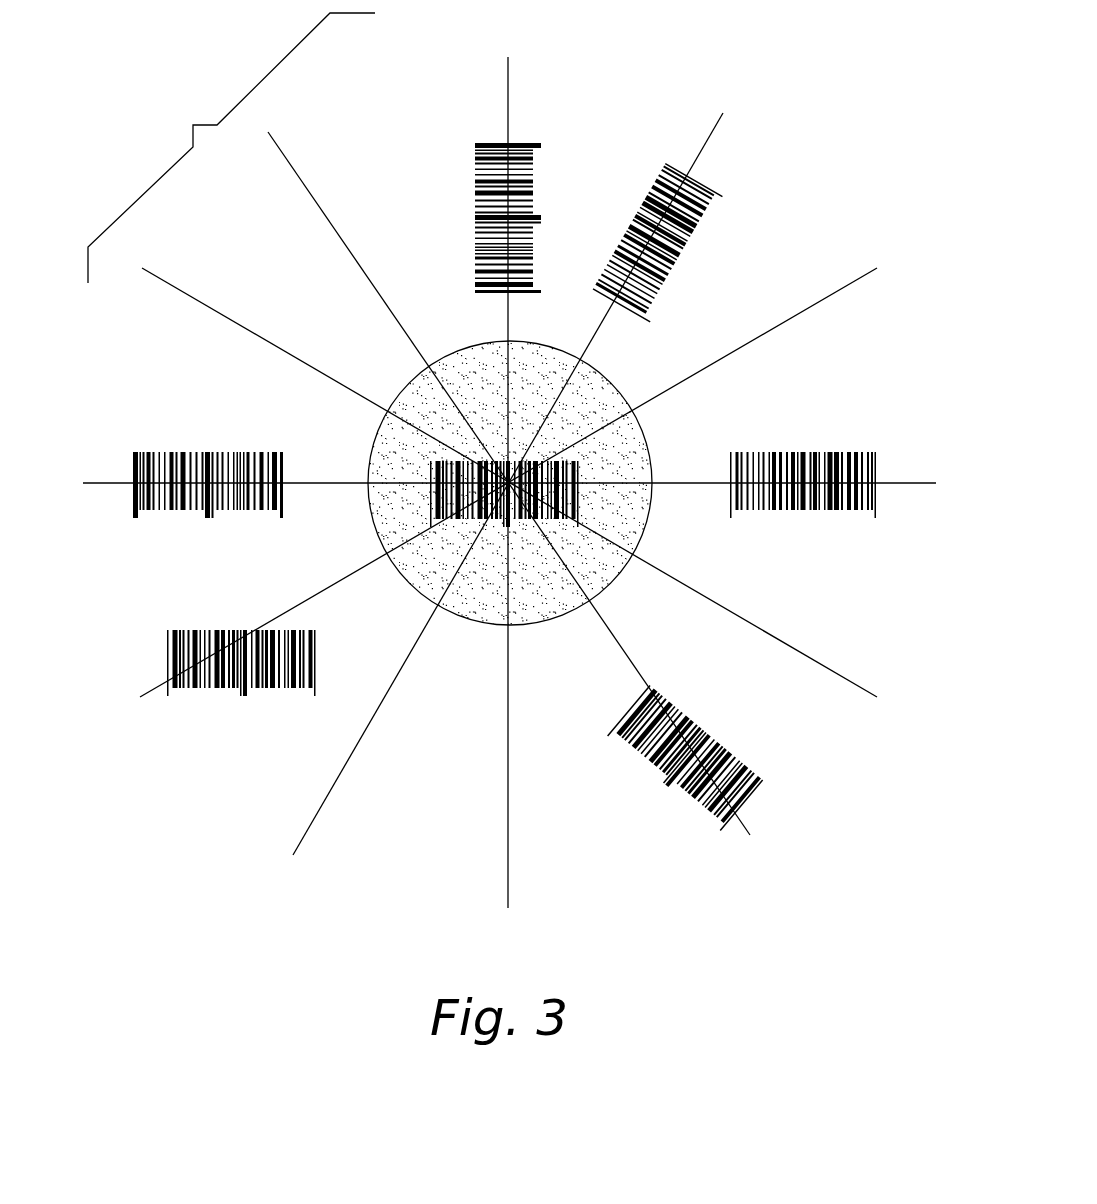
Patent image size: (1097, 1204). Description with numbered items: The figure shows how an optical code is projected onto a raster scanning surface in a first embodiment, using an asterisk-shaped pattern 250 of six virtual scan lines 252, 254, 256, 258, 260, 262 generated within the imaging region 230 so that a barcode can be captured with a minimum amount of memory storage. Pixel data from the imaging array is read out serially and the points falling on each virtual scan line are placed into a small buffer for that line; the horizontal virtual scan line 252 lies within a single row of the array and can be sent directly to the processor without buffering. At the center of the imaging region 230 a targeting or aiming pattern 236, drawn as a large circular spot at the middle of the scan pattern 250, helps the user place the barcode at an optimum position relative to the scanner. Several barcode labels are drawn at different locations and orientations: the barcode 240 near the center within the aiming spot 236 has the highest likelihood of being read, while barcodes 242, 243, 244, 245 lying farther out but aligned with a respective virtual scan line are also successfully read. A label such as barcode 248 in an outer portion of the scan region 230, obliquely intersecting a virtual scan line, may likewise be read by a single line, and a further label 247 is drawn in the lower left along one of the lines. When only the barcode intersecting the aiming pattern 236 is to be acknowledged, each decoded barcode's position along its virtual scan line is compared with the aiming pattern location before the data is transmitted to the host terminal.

The imaging region 230 is at (656, 62).
The aiming pattern 236 is at (473, 600).
The barcode label 240 is at (573, 502).
The barcode label 242 is at (223, 500).
The barcode label 243 is at (527, 162).
The barcode label 244 is at (685, 250).
The barcode label 245 is at (813, 503).
The lower left barcode 247 is at (268, 683).
The barcode label 248 is at (740, 753).
The virtual scan line pattern 250 is at (231, 148).
The virtual scan line 252 is at (117, 482).
The virtual scan line 254 is at (178, 297).
The virtual scan line 256 is at (320, 205).
The virtual scan line 258 is at (508, 122).
The virtual scan line 260 is at (708, 142).
The virtual scan line 262 is at (750, 343).